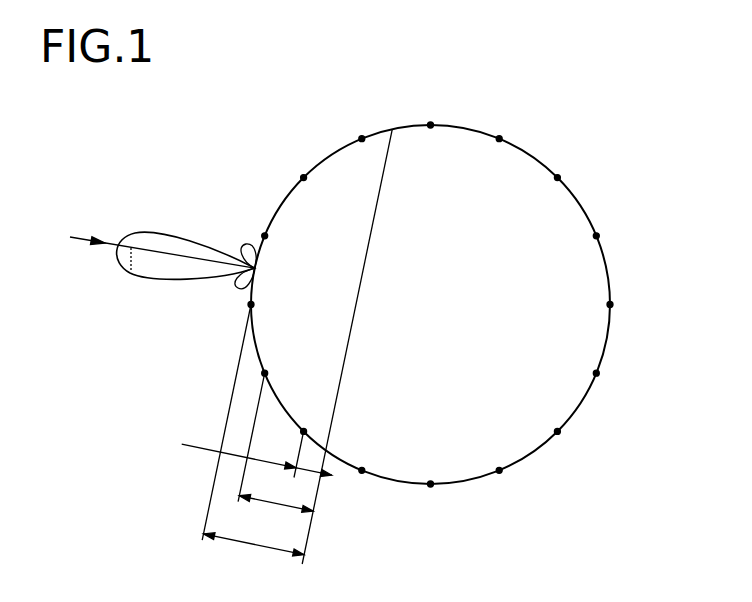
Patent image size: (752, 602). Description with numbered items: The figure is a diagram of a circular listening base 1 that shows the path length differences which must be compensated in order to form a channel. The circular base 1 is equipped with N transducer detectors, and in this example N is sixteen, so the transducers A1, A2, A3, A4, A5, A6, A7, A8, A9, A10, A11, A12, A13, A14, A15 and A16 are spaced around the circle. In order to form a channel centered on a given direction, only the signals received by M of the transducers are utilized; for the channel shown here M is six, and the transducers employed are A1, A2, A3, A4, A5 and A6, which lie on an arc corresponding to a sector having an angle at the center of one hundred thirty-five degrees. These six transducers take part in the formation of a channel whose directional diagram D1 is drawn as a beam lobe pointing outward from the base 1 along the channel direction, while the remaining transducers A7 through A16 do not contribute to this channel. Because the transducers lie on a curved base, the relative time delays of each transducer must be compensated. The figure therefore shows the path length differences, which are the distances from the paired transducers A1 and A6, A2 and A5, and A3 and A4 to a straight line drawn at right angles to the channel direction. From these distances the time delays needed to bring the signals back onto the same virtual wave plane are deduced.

The circular base 1 is at (405, 99).
The transducer detector A1 is at (302, 433).
The transducer detector A2 is at (263, 375).
The transducer detector A3 is at (250, 305).
The transducer detector A4 is at (264, 236).
The transducer detector A5 is at (302, 178).
The transducer detector A6 is at (361, 139).
The transducer detector A7 is at (431, 125).
The transducer detector A8 is at (500, 139).
The transducer detector A9 is at (558, 178).
The transducer detector A10 is at (597, 236).
The transducer detector A11 is at (611, 305).
The transducer detector A12 is at (597, 373).
The transducer detector A13 is at (558, 431).
The transducer detector A14 is at (500, 470).
The transducer detector A15 is at (431, 485).
The transducer detector A16 is at (362, 471).
The diagram D1 is at (166, 187).